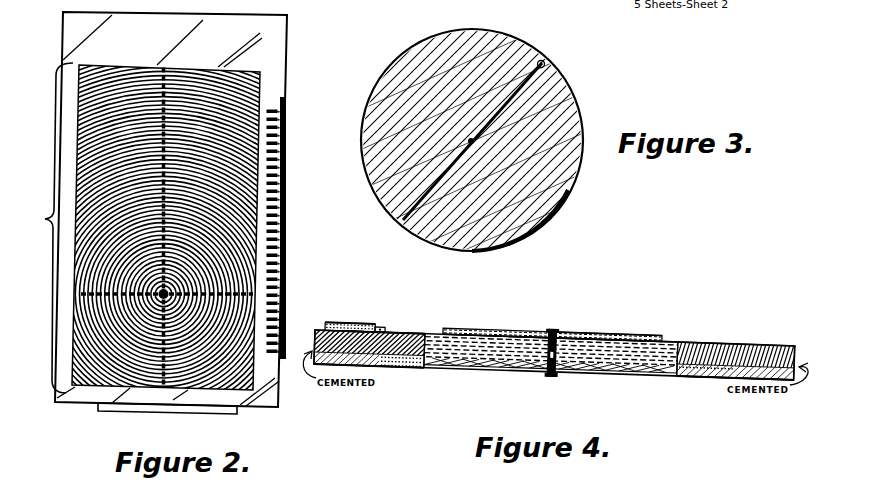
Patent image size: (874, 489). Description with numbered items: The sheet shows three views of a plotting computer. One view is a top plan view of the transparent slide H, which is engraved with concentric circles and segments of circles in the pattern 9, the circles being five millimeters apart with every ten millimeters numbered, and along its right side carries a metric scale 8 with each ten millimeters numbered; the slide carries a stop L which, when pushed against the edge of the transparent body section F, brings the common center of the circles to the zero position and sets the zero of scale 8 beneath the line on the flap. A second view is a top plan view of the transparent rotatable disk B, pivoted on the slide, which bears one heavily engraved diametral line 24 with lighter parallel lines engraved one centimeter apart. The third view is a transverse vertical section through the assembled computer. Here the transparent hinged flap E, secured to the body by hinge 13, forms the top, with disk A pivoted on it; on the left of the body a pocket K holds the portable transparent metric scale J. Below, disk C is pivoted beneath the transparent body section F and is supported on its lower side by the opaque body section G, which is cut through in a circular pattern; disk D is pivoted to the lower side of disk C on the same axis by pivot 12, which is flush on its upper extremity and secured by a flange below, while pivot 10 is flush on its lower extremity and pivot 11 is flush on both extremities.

In FIG. 2, the transparent slide H is at (274, 45).
In FIG. 4, the transparent slide H is at (647, 337).
In FIG. 2, the metric scale 8 is at (283, 104).
In FIG. 2, the pattern of concentric circles 9 is at (205, 267).
In FIG. 2, the stop L is at (222, 416).
In FIG. 3, the transparent rotatable disk B is at (577, 94).
In FIG. 4, the transparent rotatable disk B is at (503, 328).
In FIG. 3, the diametral line 24 is at (544, 60).
In FIG. 4, the disk A is at (630, 333).
In FIG. 4, the pocket K is at (323, 325).
In FIG. 4, the transparent body section F is at (348, 328).
In FIG. 4, the transparent flap E is at (408, 333).
In FIG. 4, the portable metric scale J is at (352, 327).
In FIG. 4, the hinge 13 is at (372, 330).
In FIG. 4, the disk C is at (473, 365).
In FIG. 4, the disk D is at (480, 370).
In FIG. 4, the body section G is at (377, 358).
In FIG. 4, the pivot 10 is at (549, 329).
In FIG. 4, the pivot 12 is at (550, 371).
In FIG. 4, the pivot 11 is at (577, 332).